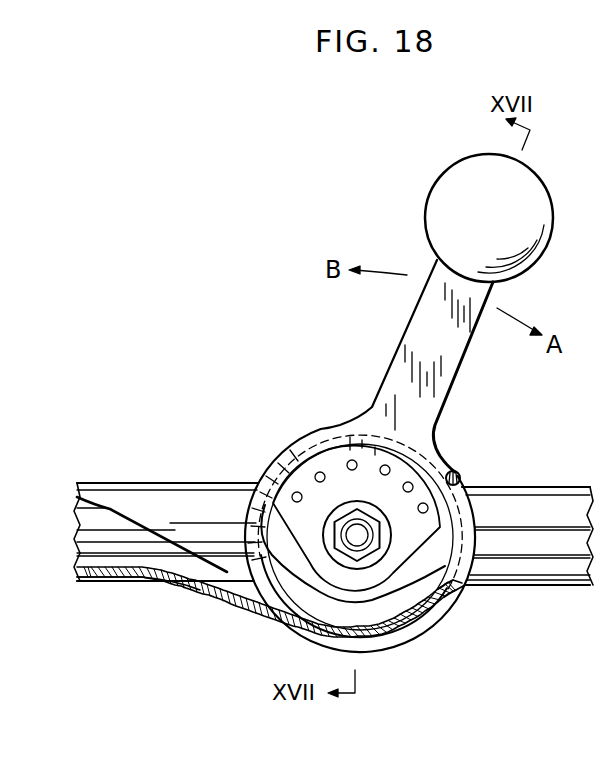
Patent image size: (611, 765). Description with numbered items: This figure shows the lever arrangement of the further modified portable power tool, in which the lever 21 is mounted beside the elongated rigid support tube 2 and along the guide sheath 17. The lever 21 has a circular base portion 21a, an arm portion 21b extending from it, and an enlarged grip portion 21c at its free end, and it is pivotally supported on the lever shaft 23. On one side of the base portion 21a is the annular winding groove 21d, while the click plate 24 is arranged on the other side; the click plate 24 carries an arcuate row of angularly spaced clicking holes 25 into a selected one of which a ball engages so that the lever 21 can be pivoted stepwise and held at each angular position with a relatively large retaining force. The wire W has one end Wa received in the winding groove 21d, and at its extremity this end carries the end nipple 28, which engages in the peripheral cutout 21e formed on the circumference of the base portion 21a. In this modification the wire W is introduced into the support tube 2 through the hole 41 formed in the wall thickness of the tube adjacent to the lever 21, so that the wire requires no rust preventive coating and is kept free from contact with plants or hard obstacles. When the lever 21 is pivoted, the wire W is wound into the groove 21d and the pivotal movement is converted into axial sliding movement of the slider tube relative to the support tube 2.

The support tube 2 is at (145, 486).
The guide sheath 17 is at (103, 522).
The lever 21 is at (456, 378).
The circular base portion 21a is at (270, 457).
The arm portion 21b is at (453, 347).
The enlarged grip portion 21c is at (533, 203).
The annular winding groove 21d is at (387, 640).
The peripheral cutout 21e is at (462, 480).
The lever shaft 23 is at (360, 522).
The click plate 24 is at (420, 528).
The clicking holes 25 is at (383, 466).
The end nipple 28 is at (455, 470).
The hole 41 is at (177, 585).
The wire W is at (97, 580).
The one end of the wire Wa is at (430, 607).